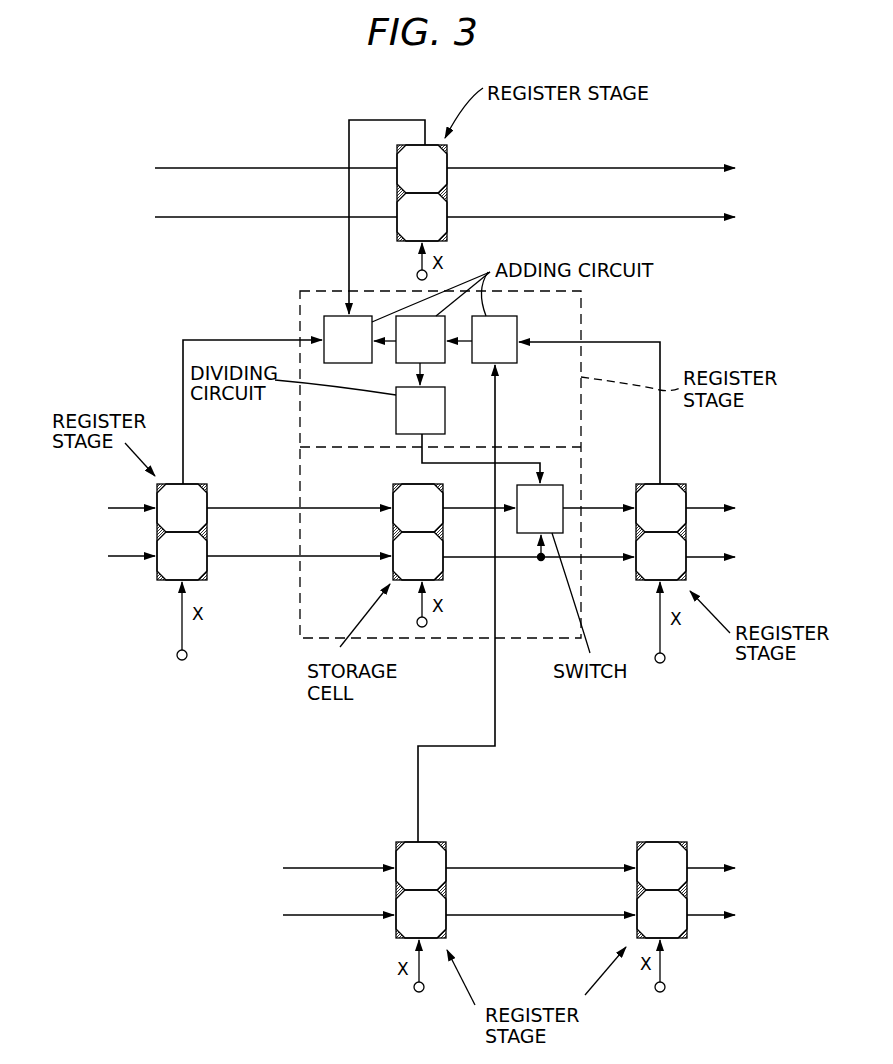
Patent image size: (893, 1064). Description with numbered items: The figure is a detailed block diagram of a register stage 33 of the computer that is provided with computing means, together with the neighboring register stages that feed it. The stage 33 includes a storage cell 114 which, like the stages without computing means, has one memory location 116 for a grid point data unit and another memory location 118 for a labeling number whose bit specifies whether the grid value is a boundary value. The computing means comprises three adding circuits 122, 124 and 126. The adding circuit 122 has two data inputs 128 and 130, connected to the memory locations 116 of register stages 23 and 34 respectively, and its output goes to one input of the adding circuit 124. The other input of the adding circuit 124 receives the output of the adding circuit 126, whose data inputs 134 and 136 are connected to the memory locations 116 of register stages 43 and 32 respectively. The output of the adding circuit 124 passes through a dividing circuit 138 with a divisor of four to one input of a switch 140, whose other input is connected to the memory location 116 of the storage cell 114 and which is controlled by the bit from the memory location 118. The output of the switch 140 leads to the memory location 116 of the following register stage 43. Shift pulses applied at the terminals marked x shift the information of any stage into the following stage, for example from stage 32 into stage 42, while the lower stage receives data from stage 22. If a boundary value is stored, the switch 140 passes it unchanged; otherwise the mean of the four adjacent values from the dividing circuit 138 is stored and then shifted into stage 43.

The register stage 22 is at (277, 891).
The register stage 23 is at (208, 487).
The register stage 32 is at (446, 940).
The register stage 33 is at (581, 412).
The register stage 34 is at (447, 150).
The register stage 42 is at (687, 940).
The register stage 43 is at (686, 488).
The storage cell 114 is at (393, 490).
The memory location 116 is at (422, 517).
The memory location 118 is at (422, 565).
The adding circuit 122 is at (348, 339).
The adding circuit 124 is at (420, 339).
The adding circuit 126 is at (494, 339).
The data input 128 is at (212, 340).
The data input 130 is at (349, 262).
The data input 134 is at (607, 342).
The data input 136 is at (495, 410).
The dividing circuit 138 is at (396, 410).
The switch 140 is at (540, 523).